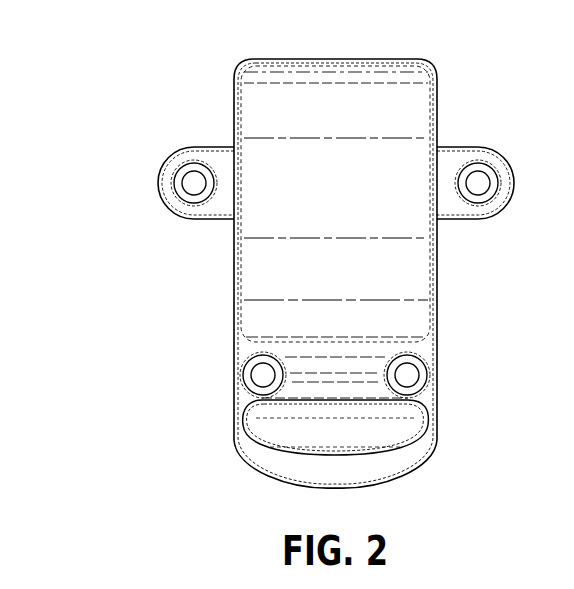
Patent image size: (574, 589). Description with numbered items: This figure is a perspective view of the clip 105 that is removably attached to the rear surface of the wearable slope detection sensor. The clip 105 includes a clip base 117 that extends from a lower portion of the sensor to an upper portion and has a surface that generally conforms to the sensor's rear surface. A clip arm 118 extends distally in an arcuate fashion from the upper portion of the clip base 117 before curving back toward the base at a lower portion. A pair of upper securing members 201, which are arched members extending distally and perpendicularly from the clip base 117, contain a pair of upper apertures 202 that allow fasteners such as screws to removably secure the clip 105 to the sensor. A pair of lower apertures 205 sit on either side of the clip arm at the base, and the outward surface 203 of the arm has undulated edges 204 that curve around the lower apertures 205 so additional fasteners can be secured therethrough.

The clip 105 is at (88, 80).
The clip base 117 is at (405, 455).
The clip arm 118 is at (263, 123).
The upper securing members 201 is at (195, 152).
The upper apertures 202 is at (192, 184).
The outward surface 203 is at (362, 110).
The undulated edges 204 is at (249, 357).
The lower apertures 205 is at (252, 380).